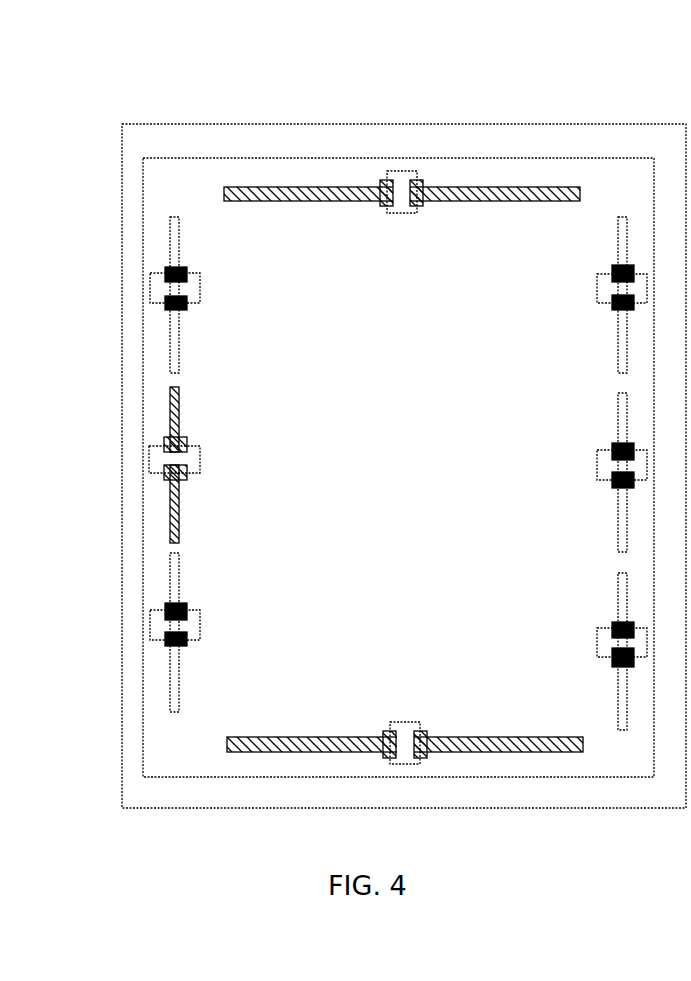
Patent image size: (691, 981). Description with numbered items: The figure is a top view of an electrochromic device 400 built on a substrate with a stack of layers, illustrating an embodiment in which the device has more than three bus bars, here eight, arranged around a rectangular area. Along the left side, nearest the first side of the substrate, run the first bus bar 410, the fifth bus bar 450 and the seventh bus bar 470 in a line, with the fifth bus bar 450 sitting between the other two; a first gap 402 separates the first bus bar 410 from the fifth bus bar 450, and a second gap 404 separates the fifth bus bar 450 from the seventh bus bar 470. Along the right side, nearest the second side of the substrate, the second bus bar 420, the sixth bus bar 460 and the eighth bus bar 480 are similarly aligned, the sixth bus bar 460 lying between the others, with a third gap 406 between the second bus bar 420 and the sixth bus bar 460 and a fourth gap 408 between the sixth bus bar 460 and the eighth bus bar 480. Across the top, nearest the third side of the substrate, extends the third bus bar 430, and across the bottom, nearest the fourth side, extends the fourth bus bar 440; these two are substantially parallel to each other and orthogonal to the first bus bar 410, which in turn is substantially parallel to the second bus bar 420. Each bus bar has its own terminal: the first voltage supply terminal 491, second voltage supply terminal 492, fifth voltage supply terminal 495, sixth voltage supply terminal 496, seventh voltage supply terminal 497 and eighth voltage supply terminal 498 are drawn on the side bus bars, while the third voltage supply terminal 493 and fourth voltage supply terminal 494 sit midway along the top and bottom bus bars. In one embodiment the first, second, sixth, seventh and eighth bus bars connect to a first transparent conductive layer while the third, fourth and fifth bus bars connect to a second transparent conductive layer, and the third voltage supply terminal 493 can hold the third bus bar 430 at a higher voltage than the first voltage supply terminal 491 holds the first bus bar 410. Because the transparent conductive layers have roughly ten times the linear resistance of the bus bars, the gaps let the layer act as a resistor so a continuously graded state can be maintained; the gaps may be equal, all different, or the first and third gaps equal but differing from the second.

The electrochromic device 400 is at (120, 102).
The first gap 402 is at (196, 381).
The second gap 404 is at (152, 552).
The third gap 406 is at (597, 388).
The fourth gap 408 is at (606, 568).
The first bus bar 410 is at (226, 318).
The second bus bar 420 is at (562, 318).
The third bus bar 430 is at (329, 215).
The fourth bus bar 440 is at (340, 726).
The fifth bus bar 450 is at (214, 500).
The sixth bus bar 460 is at (578, 505).
The seventh bus bar 470 is at (196, 586).
The eighth bus bar 480 is at (598, 683).
The first voltage supply terminal 491 is at (200, 288).
The second voltage supply terminal 492 is at (603, 287).
The third voltage supply terminal 493 is at (402, 214).
The fourth voltage supply terminal 494 is at (403, 722).
The fifth voltage supply terminal 495 is at (196, 462).
The sixth voltage supply terminal 496 is at (603, 456).
The seventh voltage supply terminal 497 is at (200, 624).
The eighth voltage supply terminal 498 is at (603, 643).